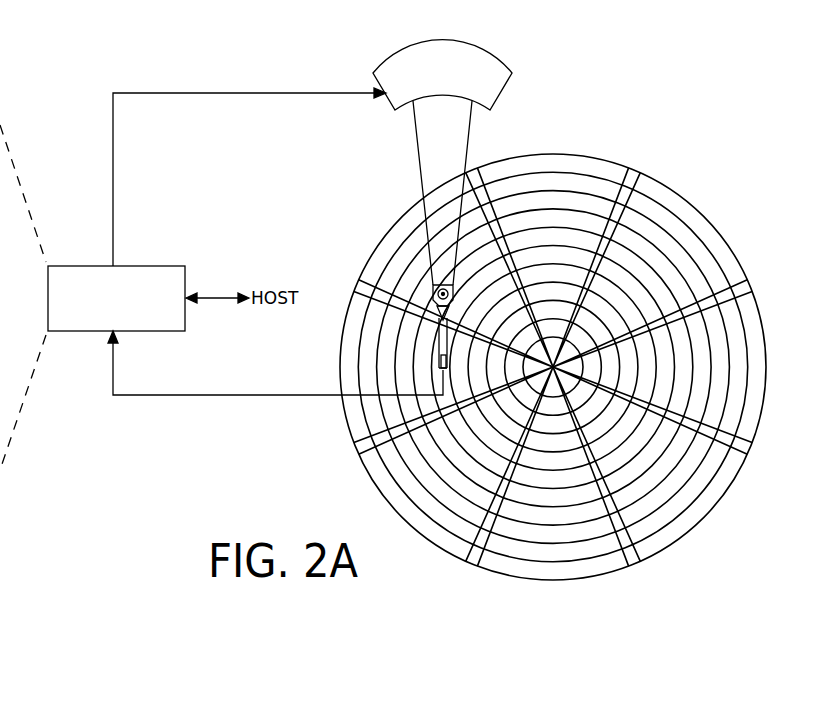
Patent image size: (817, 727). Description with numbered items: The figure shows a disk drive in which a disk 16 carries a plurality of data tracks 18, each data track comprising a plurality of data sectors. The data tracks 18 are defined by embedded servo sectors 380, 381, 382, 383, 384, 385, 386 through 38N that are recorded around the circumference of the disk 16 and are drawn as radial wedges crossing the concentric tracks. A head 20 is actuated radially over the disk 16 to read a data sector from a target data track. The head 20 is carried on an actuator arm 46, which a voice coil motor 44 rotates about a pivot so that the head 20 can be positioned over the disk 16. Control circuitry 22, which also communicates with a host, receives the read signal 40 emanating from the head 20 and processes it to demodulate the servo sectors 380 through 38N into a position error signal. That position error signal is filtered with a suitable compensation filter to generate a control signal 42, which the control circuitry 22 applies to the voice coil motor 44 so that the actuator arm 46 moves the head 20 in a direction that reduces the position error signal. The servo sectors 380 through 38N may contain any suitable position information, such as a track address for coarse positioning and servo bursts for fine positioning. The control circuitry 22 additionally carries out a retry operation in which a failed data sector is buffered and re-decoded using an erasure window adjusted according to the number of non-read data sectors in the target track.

The disk 16 is at (692, 207).
The data tracks 18 is at (553, 169).
The head 20 is at (440, 367).
The control circuitry 22 is at (153, 266).
The servo sector 380 is at (634, 173).
The servo sector 381 is at (746, 289).
The servo sector 382 is at (742, 448).
The servo sector 383 is at (634, 562).
The servo sector 384 is at (470, 563).
The servo sector 385 is at (361, 448).
The servo sector 386 is at (362, 277).
The servo sector 38N is at (484, 176).
The read signal 40 is at (235, 395).
The control signal 42 is at (113, 167).
The voice coil motor 44 is at (392, 104).
The actuator arm 46 is at (429, 183).